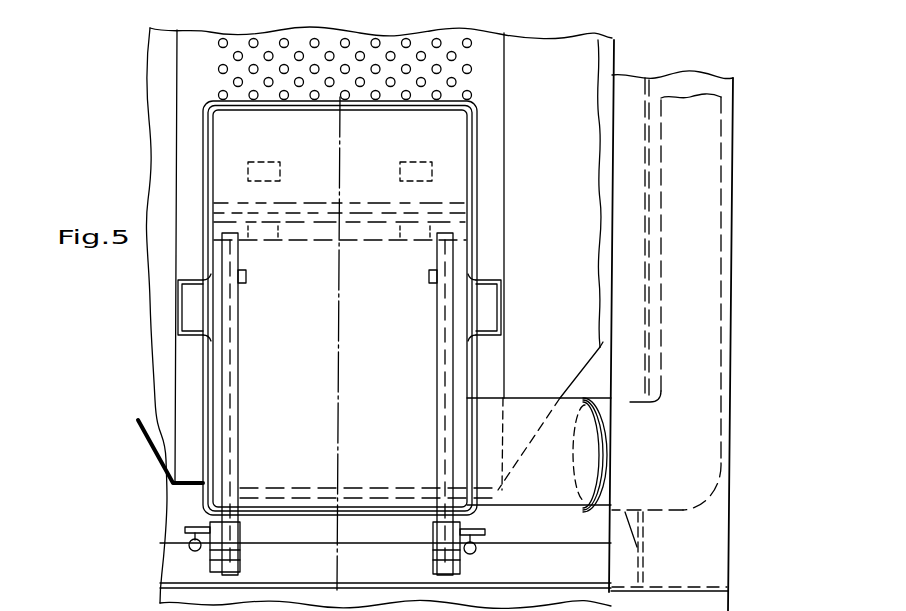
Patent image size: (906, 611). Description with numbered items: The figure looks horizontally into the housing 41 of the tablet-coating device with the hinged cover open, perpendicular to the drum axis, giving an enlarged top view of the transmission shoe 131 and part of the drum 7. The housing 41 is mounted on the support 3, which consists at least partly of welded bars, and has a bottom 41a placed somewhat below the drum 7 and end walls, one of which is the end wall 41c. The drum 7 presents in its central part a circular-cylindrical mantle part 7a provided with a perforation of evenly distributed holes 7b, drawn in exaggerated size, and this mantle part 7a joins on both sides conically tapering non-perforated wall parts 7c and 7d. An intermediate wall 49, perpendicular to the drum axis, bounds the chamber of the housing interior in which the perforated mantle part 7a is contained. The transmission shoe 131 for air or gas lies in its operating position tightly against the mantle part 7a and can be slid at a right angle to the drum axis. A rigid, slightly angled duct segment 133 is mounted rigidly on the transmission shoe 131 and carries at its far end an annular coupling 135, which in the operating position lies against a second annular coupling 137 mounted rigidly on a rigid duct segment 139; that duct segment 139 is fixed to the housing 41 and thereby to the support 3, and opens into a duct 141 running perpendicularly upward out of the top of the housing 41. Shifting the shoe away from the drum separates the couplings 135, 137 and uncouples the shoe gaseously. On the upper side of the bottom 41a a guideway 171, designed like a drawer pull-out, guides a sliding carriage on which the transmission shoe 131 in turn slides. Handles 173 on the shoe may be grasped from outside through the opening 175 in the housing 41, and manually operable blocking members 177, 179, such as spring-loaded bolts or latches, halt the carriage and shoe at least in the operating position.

The support 3 is at (712, 582).
The drum 7 is at (138, 424).
The circular-cylindrical mantle part 7a is at (495, 93).
The perforation holes 7b is at (472, 70).
The conically tapering wall part 7c is at (150, 447).
The conically tapering wall part 7d is at (583, 370).
The housing 41 is at (728, 565).
The bottom 41a is at (165, 566).
The end wall 41c is at (728, 525).
The intermediate wall 49 is at (640, 143).
The transmission shoe 131 is at (480, 221).
The rigid duct segment 133 is at (530, 506).
The annular coupling 135 is at (577, 476).
The annular coupling 137 is at (608, 482).
The rigid duct segment 139 is at (636, 546).
The duct 141 is at (722, 192).
The guideway 171 is at (210, 560).
The handles 173 is at (182, 308).
The opening 175 is at (612, 290).
The blocking member 177 is at (477, 549).
The blocking member 179 is at (186, 530).